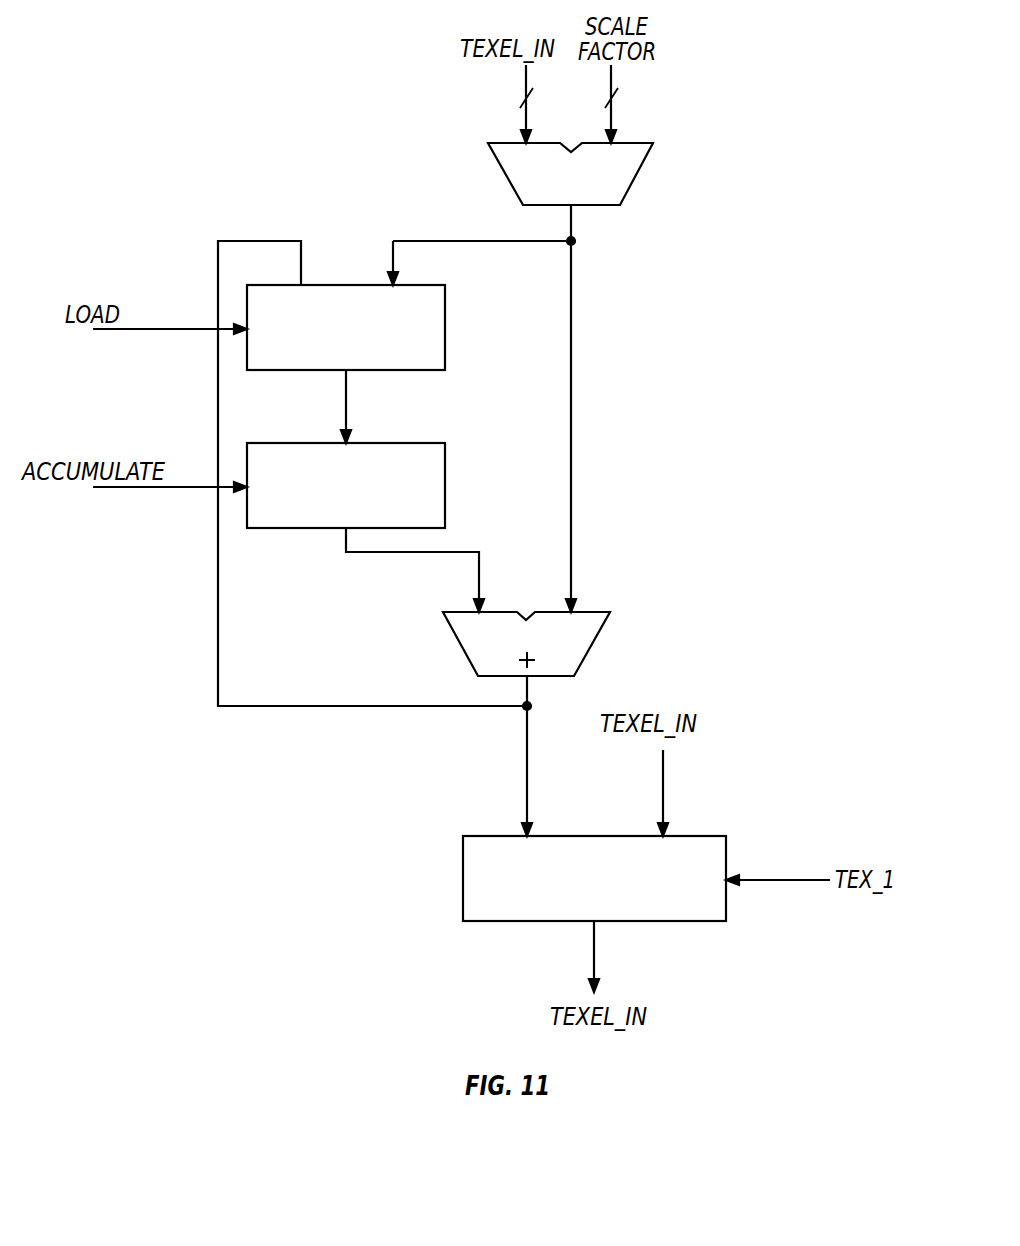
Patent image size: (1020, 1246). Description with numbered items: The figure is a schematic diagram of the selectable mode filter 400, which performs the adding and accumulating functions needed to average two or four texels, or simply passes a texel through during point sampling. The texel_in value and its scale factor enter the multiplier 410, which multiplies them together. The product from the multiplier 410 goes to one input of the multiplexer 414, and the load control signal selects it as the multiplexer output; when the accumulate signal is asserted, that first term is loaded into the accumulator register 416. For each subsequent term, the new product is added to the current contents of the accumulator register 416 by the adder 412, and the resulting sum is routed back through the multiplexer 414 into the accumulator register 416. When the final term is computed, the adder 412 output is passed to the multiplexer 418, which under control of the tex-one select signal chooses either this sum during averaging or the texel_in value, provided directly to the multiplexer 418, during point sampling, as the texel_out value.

The selectable mode filter 400 is at (158, 187).
The multiplier 410 is at (643, 163).
The adder 412 is at (605, 620).
The multiplexer 414 is at (447, 312).
The accumulator register 416 is at (447, 488).
The multiplexer 418 is at (684, 921).